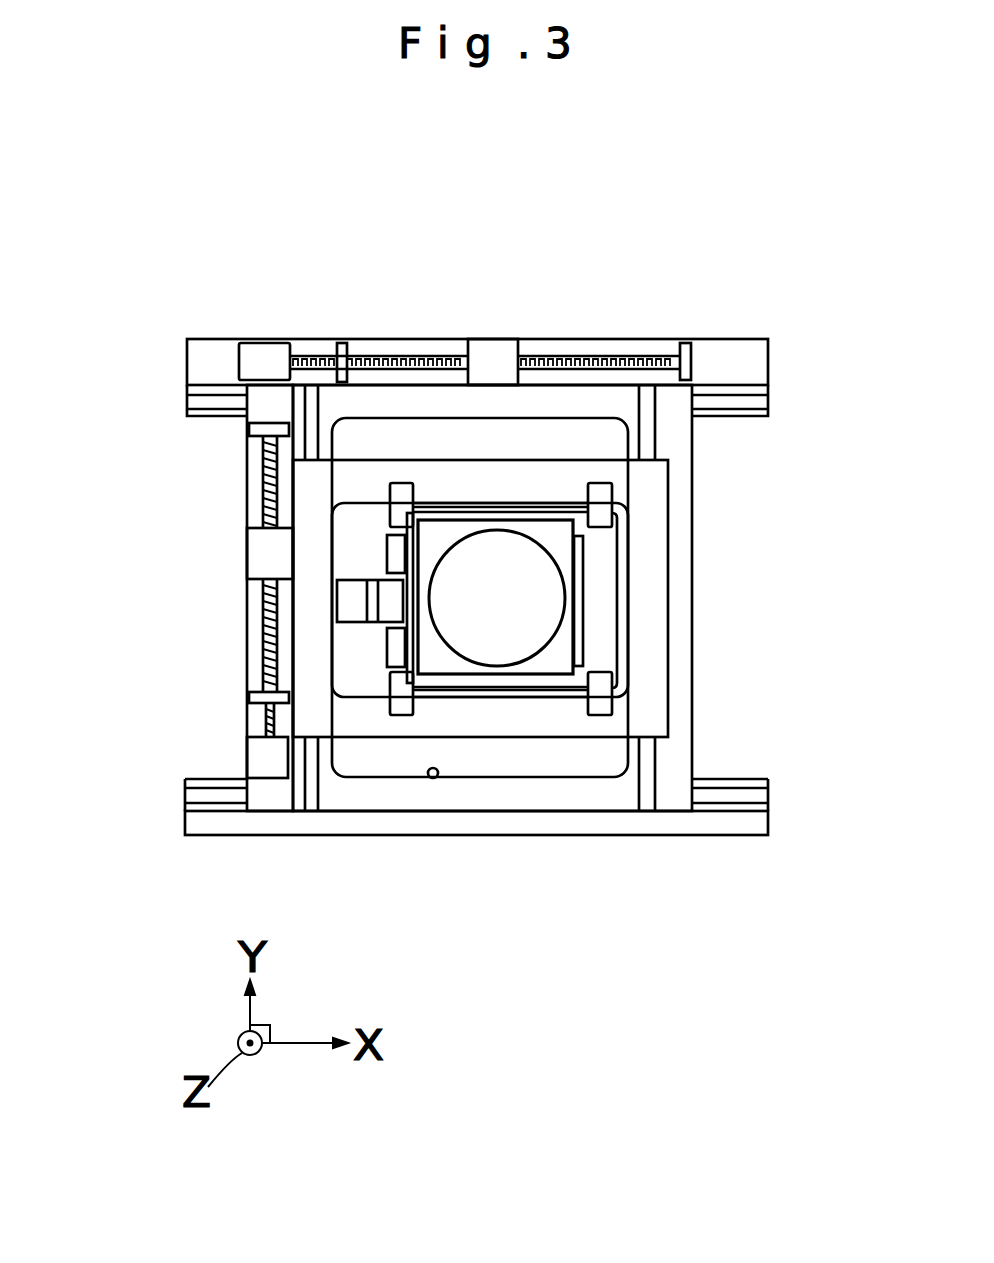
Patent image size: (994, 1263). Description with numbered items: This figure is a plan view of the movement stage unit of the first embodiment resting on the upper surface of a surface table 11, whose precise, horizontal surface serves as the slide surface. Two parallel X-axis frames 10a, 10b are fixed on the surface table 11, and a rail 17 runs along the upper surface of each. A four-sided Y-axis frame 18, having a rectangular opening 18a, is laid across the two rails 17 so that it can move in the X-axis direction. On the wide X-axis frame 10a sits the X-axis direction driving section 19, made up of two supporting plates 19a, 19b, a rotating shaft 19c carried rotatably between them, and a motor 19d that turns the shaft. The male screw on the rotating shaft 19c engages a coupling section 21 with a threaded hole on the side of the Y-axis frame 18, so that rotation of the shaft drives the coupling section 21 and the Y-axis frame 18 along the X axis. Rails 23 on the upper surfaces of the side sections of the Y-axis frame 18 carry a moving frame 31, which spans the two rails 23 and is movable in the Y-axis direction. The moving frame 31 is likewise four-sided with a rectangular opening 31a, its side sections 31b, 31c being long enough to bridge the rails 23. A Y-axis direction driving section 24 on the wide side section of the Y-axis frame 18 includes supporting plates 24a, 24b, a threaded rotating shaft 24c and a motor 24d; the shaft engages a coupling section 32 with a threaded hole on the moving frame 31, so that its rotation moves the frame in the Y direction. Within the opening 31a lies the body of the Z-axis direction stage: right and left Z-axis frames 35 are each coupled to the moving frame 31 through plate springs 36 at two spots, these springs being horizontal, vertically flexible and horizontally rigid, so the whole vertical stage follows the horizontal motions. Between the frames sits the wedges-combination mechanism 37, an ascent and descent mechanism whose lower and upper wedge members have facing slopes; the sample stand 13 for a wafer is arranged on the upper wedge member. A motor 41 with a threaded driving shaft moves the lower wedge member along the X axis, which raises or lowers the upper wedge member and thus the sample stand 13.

The surface table 11 is at (743, 732).
The X-axis frame 10a is at (203, 372).
The X-axis frame 10b is at (200, 818).
The rail 17 is at (200, 400).
The Y-axis frame 18 is at (352, 802).
The opening 18a is at (428, 778).
The X-axis direction driving section 19 is at (492, 287).
The supporting plate 19a is at (345, 340).
The supporting plate 19b is at (690, 340).
The rotating shaft 19c is at (427, 360).
The motor 19d is at (268, 340).
The coupling section 21 is at (495, 367).
The rail 23 is at (308, 803).
The Y-axis direction driving section 24 is at (186, 598).
The supporting plate 24a is at (252, 697).
The supporting plate 24b is at (243, 430).
The rotating shaft 24c is at (262, 632).
The motor 24d is at (262, 748).
The moving frame 31 is at (648, 613).
The opening 31a is at (622, 558).
The side section 31b is at (523, 480).
The side section 31c is at (520, 725).
The coupling section 32 is at (258, 556).
The Z-axis frame 35 is at (453, 513).
The plate spring 36 is at (398, 497).
The wedges-combination mechanism 37 is at (552, 538).
The sample stand 13 is at (483, 653).
The motor 41 is at (350, 604).